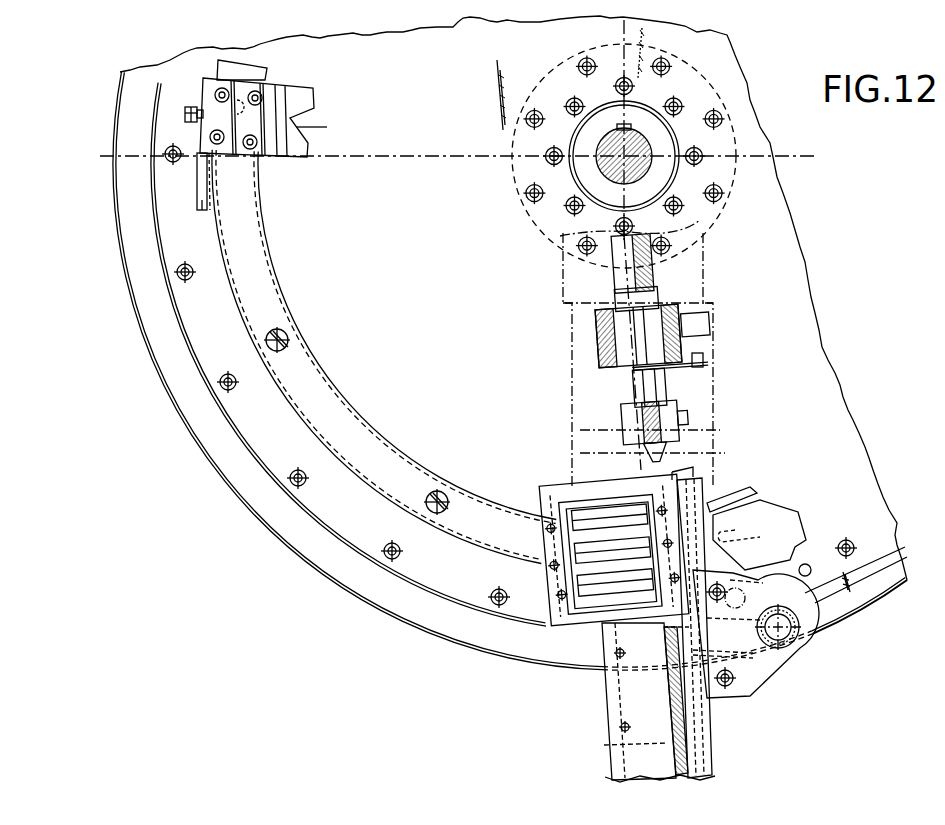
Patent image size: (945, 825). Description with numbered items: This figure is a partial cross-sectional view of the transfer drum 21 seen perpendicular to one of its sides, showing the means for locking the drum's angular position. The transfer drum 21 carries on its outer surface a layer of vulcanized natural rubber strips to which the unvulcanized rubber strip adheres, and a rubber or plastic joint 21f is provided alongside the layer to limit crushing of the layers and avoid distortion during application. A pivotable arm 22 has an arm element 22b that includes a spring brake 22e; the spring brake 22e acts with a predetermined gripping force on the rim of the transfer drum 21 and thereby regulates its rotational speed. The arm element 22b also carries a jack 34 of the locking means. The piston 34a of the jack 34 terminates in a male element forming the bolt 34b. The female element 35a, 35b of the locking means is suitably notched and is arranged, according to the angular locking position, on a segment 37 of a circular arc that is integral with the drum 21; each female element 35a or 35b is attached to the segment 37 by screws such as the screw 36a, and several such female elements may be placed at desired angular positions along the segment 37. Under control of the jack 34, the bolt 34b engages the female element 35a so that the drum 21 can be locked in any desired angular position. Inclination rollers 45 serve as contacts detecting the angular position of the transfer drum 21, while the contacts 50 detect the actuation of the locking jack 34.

The transfer drum 21 is at (642, 163).
The joint 21f is at (352, 595).
The pivotable arm 22 is at (655, 698).
The arm element 22b is at (760, 745).
The spring brake 22e is at (790, 637).
The jack 34 is at (648, 262).
The piston 34a is at (643, 365).
The bolt 34b is at (647, 452).
The female element 35a is at (290, 160).
The female element 35b is at (690, 473).
The screw 36a is at (185, 112).
The segment 37 is at (268, 250).
The inclination rollers 45 is at (590, 543).
The contacts 50 is at (702, 358).